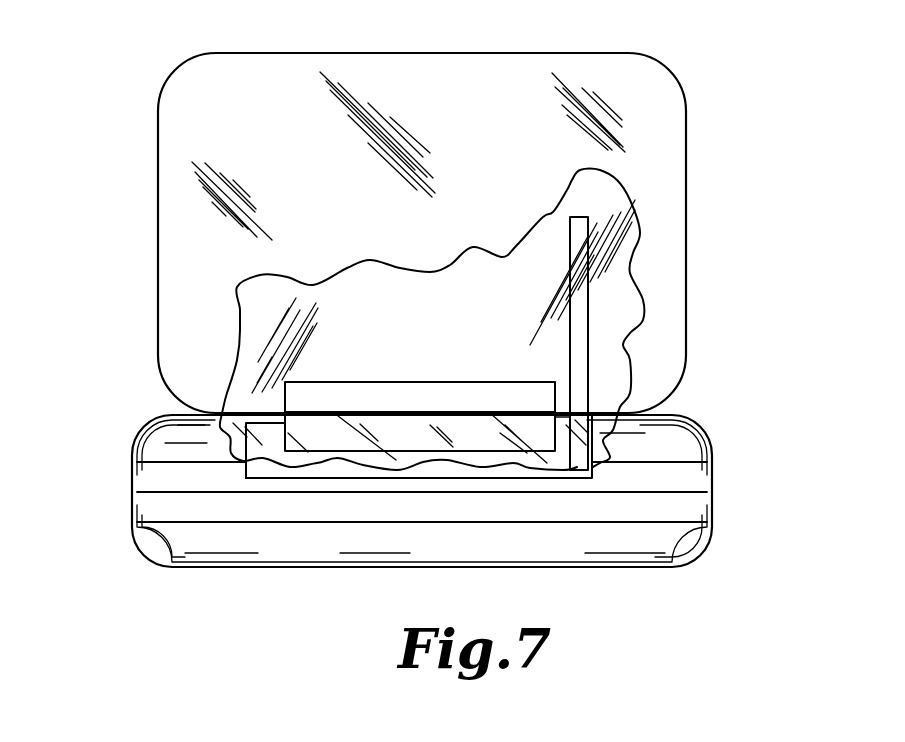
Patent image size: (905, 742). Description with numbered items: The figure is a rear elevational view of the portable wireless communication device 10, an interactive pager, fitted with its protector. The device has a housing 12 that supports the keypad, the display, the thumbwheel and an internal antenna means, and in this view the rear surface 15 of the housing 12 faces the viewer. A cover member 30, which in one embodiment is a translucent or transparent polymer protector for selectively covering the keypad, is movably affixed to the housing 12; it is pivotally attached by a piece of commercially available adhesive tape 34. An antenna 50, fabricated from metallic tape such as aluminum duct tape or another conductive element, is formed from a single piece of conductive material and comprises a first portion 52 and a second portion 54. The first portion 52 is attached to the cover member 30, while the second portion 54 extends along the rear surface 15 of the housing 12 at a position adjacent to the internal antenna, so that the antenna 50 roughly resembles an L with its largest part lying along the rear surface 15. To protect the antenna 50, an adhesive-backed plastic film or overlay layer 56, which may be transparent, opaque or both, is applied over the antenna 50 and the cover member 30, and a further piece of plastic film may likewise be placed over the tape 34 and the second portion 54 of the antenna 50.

The portable wireless communication device 10 is at (700, 566).
The housing 12 is at (687, 440).
The rear surface 15 is at (183, 448).
The cover member 30 is at (665, 103).
The adhesive tape 34 is at (330, 432).
The antenna 50 is at (592, 358).
The first portion 52 is at (579, 312).
The second portion 54 is at (587, 470).
The overlay layer 56 is at (602, 190).